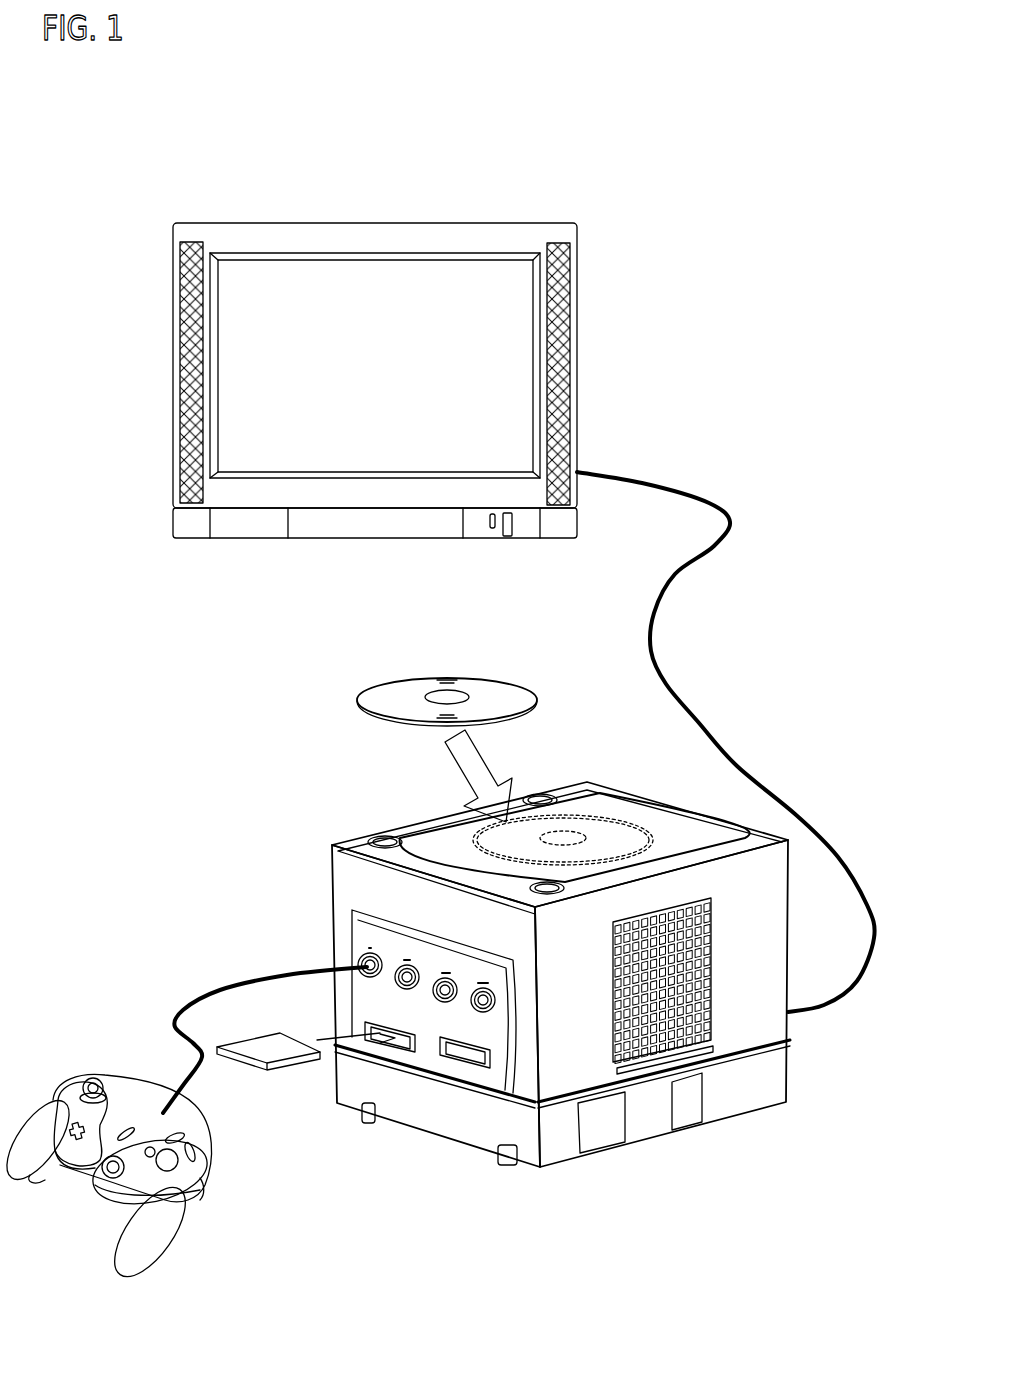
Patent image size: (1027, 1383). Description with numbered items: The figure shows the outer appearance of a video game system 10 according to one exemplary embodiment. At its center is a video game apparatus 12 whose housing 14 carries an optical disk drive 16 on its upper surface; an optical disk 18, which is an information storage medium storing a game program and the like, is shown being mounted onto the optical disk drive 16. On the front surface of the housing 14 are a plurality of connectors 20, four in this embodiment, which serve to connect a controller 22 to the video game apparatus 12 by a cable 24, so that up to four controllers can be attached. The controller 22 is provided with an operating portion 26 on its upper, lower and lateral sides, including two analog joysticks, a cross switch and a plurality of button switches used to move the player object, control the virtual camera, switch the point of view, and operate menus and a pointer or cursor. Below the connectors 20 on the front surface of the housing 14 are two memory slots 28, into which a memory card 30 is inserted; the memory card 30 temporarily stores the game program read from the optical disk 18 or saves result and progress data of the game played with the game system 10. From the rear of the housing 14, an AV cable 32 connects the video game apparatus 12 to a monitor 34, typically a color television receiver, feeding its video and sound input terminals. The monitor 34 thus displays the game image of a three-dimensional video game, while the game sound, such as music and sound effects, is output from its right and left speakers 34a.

The video game system 10 is at (192, 628).
The video game apparatus 12 is at (617, 780).
The housing 14 is at (332, 892).
The optical disk drive 16 is at (620, 820).
The optical disk 18 is at (503, 678).
The connectors 20 is at (353, 962).
The controller 22 is at (144, 1074).
The cable 24 is at (225, 988).
The operating portion 26 is at (170, 1186).
The memory slots 28 is at (465, 1070).
The memory card 30 is at (283, 1070).
The AV cable 32 is at (658, 605).
The monitor 34 is at (578, 378).
The speakers 34a is at (173, 275).